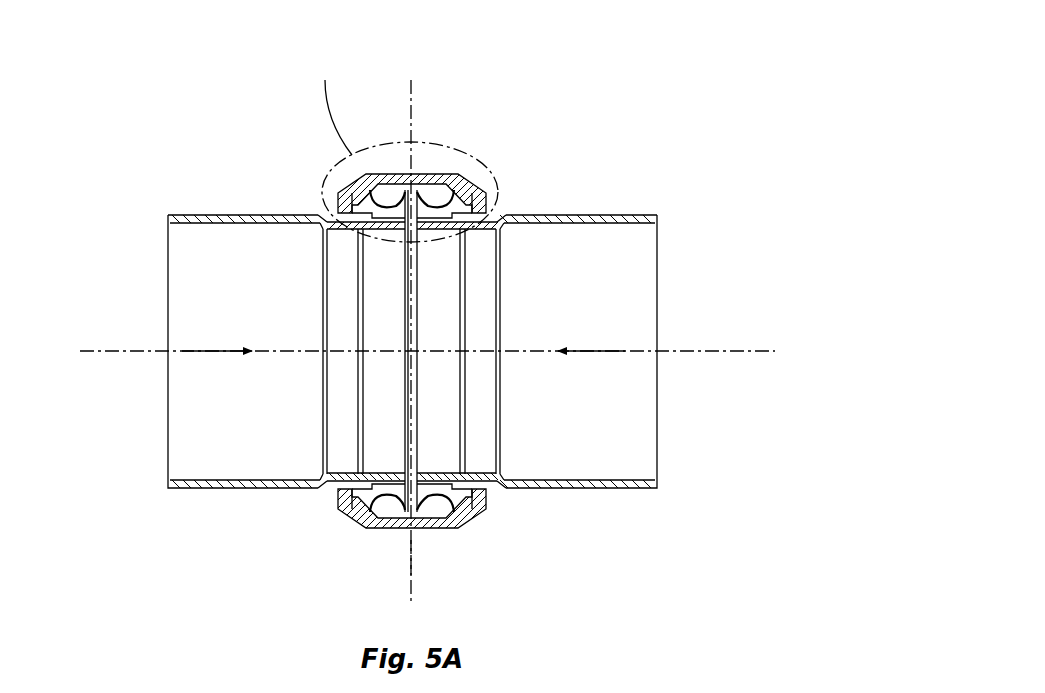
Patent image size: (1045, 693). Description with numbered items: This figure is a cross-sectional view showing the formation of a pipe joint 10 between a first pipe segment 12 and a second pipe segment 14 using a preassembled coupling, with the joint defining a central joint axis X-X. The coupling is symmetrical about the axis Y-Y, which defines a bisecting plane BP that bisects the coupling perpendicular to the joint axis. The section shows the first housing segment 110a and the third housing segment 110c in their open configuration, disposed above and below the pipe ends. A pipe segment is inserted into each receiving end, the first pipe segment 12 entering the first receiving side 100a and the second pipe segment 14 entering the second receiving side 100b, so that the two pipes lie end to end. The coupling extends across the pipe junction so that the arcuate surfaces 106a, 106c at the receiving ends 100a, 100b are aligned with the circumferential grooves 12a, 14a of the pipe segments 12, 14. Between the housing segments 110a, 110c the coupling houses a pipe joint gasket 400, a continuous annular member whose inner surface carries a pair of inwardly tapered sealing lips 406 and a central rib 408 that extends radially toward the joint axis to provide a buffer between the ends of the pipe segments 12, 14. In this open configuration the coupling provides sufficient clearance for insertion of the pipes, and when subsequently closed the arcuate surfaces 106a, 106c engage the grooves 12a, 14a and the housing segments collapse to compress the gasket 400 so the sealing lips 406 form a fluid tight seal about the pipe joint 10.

The pipe joint 10 is at (636, 62).
The first pipe segment 12 is at (591, 215).
The circumferential groove 12a is at (504, 216).
The second pipe segment 14 is at (231, 215).
The circumferential groove 14a is at (345, 230).
The arcuate surface 106a is at (345, 228).
The arcuate surface 106c is at (345, 492).
The gasket member 400 is at (386, 175).
The sealing lips 406 is at (338, 205).
The central rib 408 is at (408, 388).
The first housing segment 110a is at (447, 175).
The third housing segment 110c is at (463, 520).
The first receiving side 100a is at (500, 501).
The second receiving side 100b is at (321, 506).
The bisecting plane BP is at (412, 558).